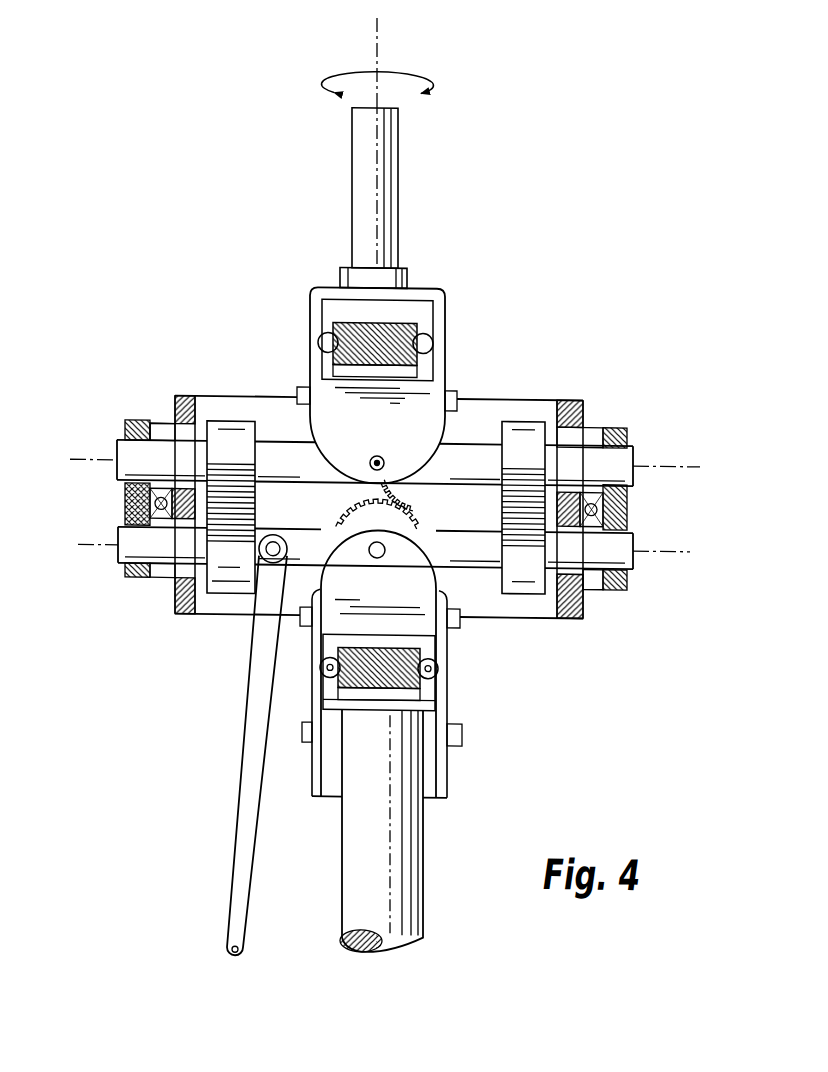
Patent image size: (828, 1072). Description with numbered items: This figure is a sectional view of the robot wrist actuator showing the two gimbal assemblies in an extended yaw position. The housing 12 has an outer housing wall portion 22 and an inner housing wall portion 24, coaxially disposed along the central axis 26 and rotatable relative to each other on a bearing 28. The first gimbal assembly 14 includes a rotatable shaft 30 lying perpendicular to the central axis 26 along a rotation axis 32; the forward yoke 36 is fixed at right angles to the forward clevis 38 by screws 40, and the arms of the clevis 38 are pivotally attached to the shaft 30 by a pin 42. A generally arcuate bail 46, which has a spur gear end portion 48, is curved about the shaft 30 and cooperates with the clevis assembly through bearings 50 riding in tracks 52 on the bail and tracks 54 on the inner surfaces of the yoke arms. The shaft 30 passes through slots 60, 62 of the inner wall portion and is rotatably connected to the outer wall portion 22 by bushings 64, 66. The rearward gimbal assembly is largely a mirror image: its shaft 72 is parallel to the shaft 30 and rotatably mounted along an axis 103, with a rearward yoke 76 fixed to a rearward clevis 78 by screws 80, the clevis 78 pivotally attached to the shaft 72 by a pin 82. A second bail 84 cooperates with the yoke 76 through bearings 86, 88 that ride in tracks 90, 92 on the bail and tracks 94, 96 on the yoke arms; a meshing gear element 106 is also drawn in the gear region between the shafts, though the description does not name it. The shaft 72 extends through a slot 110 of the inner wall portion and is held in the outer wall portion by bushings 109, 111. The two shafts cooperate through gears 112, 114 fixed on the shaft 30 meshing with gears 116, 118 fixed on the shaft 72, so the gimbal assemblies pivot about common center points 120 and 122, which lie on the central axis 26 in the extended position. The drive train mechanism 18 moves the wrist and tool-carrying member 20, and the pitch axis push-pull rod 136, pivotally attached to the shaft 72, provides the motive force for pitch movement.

The housing 12 is at (531, 397).
The first gimbal assembly 14 is at (448, 358).
The drive train mechanism 18 is at (432, 828).
The tool-carrying member 20 is at (402, 160).
The outer housing wall portion 22 is at (630, 507).
The inner housing wall portion 24 is at (584, 399).
The central axis 26 is at (381, 52).
The bearing 28 is at (630, 519).
The rotatable shaft 30 is at (497, 486).
The rotation axis 32 is at (385, 453).
The forward yoke 36 is at (437, 340).
The forward clevis 38 is at (441, 436).
The screws 40 is at (297, 398).
The pin 42 is at (371, 462).
The bail 46 is at (436, 322).
The gear end portion 48 is at (408, 493).
The bearings 50 is at (320, 338).
The tracks 52 is at (350, 322).
The tracks 54 is at (320, 346).
The slot 60 is at (166, 433).
The slot 62 is at (572, 436).
The bushing 64 is at (125, 436).
The bushing 66 is at (615, 440).
The shaft 72 is at (336, 531).
The rearward yoke 76 is at (449, 768).
The rearward clevis 78 is at (415, 548).
The screws 80 is at (462, 615).
The pin 82 is at (345, 552).
The bail 84 is at (382, 689).
The bearing 86 is at (330, 675).
The bearing 88 is at (440, 668).
The track 90 is at (348, 690).
The track 92 is at (438, 666).
The track 94 is at (320, 668).
The track 96 is at (440, 672).
The axis 103 is at (690, 566).
The driven gear 106 is at (412, 513).
The bushing 109 is at (125, 511).
The slot 110 is at (580, 600).
The bushing 111 is at (613, 590).
The gear 112 is at (309, 465).
The gear 114 is at (498, 486).
The gear 116 is at (256, 508).
The gear 118 is at (500, 555).
The center point 120 is at (398, 452).
The center point 122 is at (378, 558).
The pitch axis push-pull rod 136 is at (250, 786).